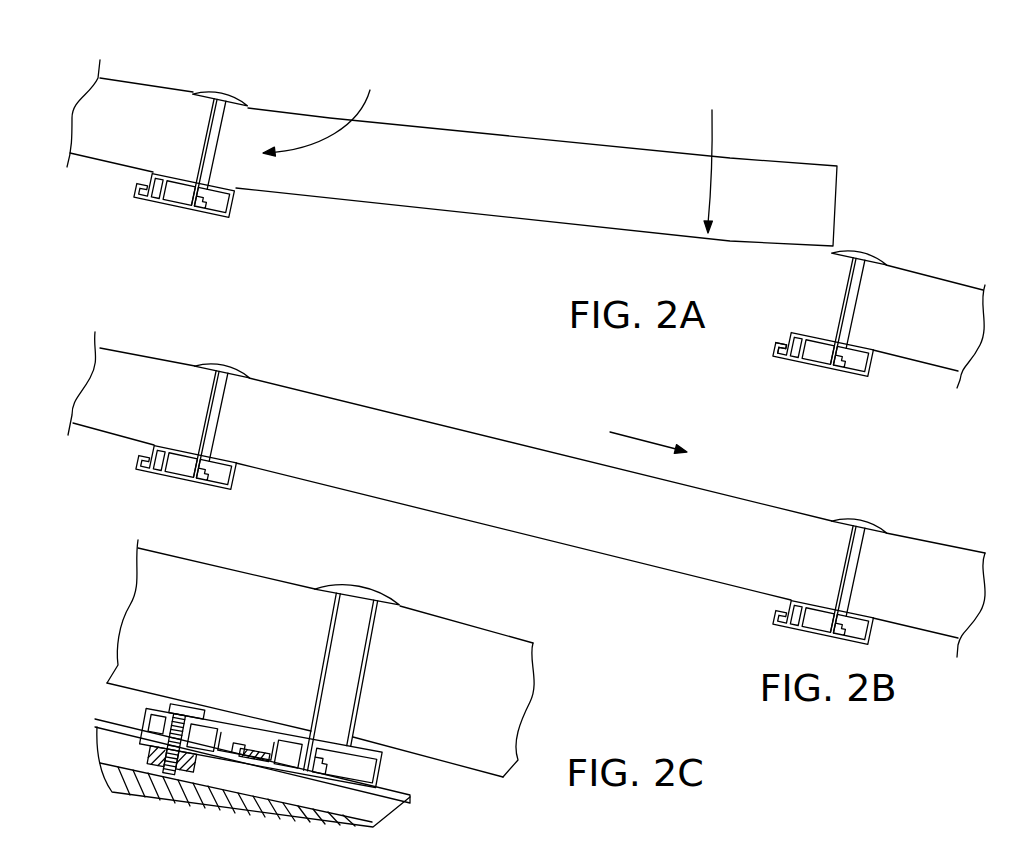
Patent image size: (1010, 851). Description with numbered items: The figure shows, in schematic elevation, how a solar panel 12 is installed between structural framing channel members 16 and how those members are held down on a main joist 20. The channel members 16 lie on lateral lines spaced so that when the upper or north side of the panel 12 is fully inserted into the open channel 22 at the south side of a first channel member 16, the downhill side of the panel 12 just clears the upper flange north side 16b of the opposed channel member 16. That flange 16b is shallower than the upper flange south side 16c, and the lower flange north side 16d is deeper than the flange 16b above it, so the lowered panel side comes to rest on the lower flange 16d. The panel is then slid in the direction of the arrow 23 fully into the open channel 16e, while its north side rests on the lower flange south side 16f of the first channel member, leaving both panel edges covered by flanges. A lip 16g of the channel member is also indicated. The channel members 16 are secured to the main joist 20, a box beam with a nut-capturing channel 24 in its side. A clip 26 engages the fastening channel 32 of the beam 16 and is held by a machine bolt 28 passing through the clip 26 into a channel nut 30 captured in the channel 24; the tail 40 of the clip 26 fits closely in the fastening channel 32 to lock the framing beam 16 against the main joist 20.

In FIG. 2A, the panel 12 is at (138, 83).
In FIG. 2B, the panel 12 is at (143, 357).
In FIG. 2C, the panel 12 is at (243, 573).
In FIG. 2A, the structural framing channel member 16 is at (543, 216).
In FIG. 2B, the structural framing channel member 16 is at (512, 541).
In FIG. 2C, the structural framing channel member 16 is at (240, 685).
In FIG. 2A, the upper flange north side 16b is at (197, 91).
In FIG. 2B, the upper flange north side 16b is at (198, 365).
In FIG. 2C, the upper flange north side 16b is at (322, 586).
In FIG. 2A, the upper flange south side 16c is at (247, 105).
In FIG. 2B, the upper flange south side 16c is at (249, 378).
In FIG. 2C, the upper flange south side 16c is at (400, 605).
In FIG. 2A, the lower flange north side 16d is at (801, 336).
In FIG. 2B, the open channel 16e is at (828, 562).
In FIG. 2A, the lower flange south side 16f is at (860, 347).
In FIG. 2B, the lower flange south side 16f is at (220, 452).
In FIG. 2B, the lip of connector 16g is at (196, 430).
In FIG. 2C, the lip of connector 16g is at (326, 645).
In FIG. 2C, the main joist 20 is at (385, 781).
In FIG. 2A, the open channel 22 is at (204, 168).
In FIG. 2C, the open channel 22 is at (342, 683).
In FIG. 2B, the arrow 23 is at (645, 440).
In FIG. 2C, the nut-capturing channel 24 is at (120, 745).
In FIG. 2C, the clip 26 is at (230, 745).
In FIG. 2C, the machine bolt 28 is at (187, 705).
In FIG. 2C, the channel nut 30 is at (153, 752).
In FIG. 2C, the fastening channel 32 is at (248, 733).
In FIG. 2C, the tail 40 is at (266, 740).